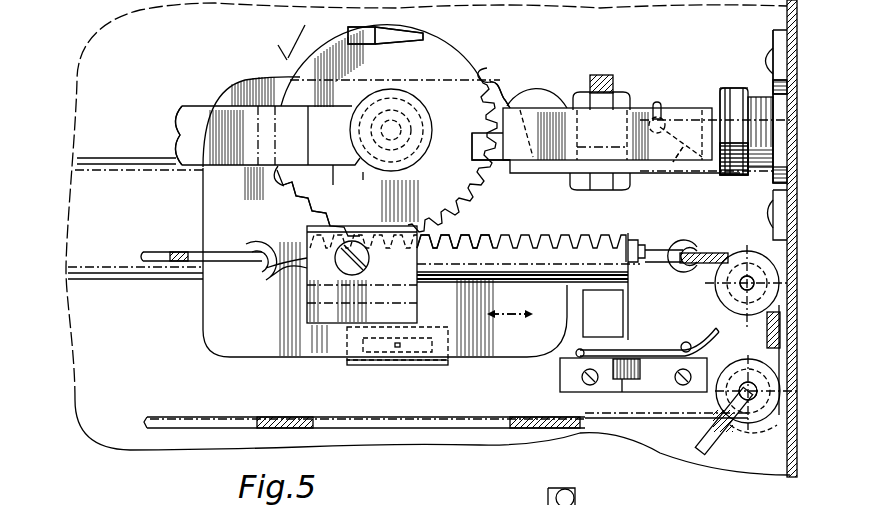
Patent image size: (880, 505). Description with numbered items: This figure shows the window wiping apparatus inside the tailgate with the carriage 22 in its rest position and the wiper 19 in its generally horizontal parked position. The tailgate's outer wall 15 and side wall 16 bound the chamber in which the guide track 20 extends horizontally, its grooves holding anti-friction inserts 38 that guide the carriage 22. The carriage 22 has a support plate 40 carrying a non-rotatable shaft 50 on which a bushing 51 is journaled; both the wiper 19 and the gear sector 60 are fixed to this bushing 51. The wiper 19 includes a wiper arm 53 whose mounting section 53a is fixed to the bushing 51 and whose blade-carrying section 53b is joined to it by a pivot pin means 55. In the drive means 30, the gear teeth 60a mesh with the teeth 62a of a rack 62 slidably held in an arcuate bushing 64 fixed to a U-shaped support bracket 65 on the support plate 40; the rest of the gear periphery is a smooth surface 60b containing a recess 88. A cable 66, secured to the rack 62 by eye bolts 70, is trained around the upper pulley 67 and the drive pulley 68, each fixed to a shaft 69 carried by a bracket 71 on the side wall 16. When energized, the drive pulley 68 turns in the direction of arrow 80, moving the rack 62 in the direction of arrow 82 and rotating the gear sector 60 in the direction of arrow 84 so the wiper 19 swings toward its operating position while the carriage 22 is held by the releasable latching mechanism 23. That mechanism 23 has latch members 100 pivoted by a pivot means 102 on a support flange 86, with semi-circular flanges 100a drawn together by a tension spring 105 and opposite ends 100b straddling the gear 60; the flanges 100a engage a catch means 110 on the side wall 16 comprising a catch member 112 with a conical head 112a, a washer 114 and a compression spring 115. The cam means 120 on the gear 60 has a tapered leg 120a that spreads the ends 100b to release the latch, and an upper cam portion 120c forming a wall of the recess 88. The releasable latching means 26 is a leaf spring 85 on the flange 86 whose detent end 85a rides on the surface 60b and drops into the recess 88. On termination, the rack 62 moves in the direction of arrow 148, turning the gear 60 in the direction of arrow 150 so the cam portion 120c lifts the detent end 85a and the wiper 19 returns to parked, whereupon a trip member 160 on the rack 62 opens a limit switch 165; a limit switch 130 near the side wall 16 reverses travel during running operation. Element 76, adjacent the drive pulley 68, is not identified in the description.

The outer wall 15 is at (85, 387).
The side wall 16 is at (794, 15).
The guide track 20 is at (105, 155).
The U-shaped insert 38 is at (87, 279).
The wiper arm 53 is at (191, 103).
The mounting section 53a is at (333, 166).
The wiper blade assembly carrying section 53b is at (190, 135).
The carriage 22 is at (226, 80).
The smooth peripheral surface 60b is at (290, 73).
The arrow 150 is at (283, 58).
The arrow 84 is at (286, 55).
The recess 88 is at (322, 72).
The wiper 19 is at (438, 126).
The bushing 51 is at (402, 118).
The cam means 120 is at (384, 24).
The upper cam portion 120c is at (364, 27).
The leg portion 120a is at (388, 40).
The support plate 40 is at (213, 318).
The gear sector 60 is at (293, 176).
The gear teeth 60a is at (303, 213).
The pivot pin means 55 is at (283, 177).
The non-rotatable shaft 50 is at (363, 173).
The U-shaped support bracket 65 is at (305, 300).
The arcuate bushing 64 is at (367, 238).
The eye bolt 70 is at (248, 236).
The rack 62 is at (570, 260).
The rack teeth 62a is at (478, 236).
The arrow 82 is at (510, 302).
The arrow 148 is at (530, 316).
The upper pulley 67 is at (738, 253).
The bracket 71 is at (750, 257).
The trip member 160 is at (640, 348).
The limit switch 165 is at (559, 380).
The drive pulley 68 is at (742, 365).
The shaft 76 is at (707, 435).
The arrow 80 is at (773, 427).
The shaft 69 is at (768, 340).
The limit switch 130 is at (407, 360).
The cable 66 is at (222, 420).
The drive means 30 is at (435, 413).
The latch member 100 is at (675, 108).
The support flange 86 is at (545, 173).
The latch member end 100b is at (478, 143).
The pivot means 102 is at (598, 74).
The tension spring 105 is at (653, 105).
The leaf spring 85 is at (525, 92).
The detent end 85a is at (490, 73).
The releasable latching means 26 is at (510, 80).
The catch member 112 is at (718, 104).
The annular washer 114 is at (742, 98).
The compression spring 115 is at (772, 102).
The catch means 110 is at (753, 174).
The conical shaped head 112a is at (678, 162).
The releasable latching mechanism 23 is at (717, 72).
The semi-circularly shaped flange 100a is at (722, 103).